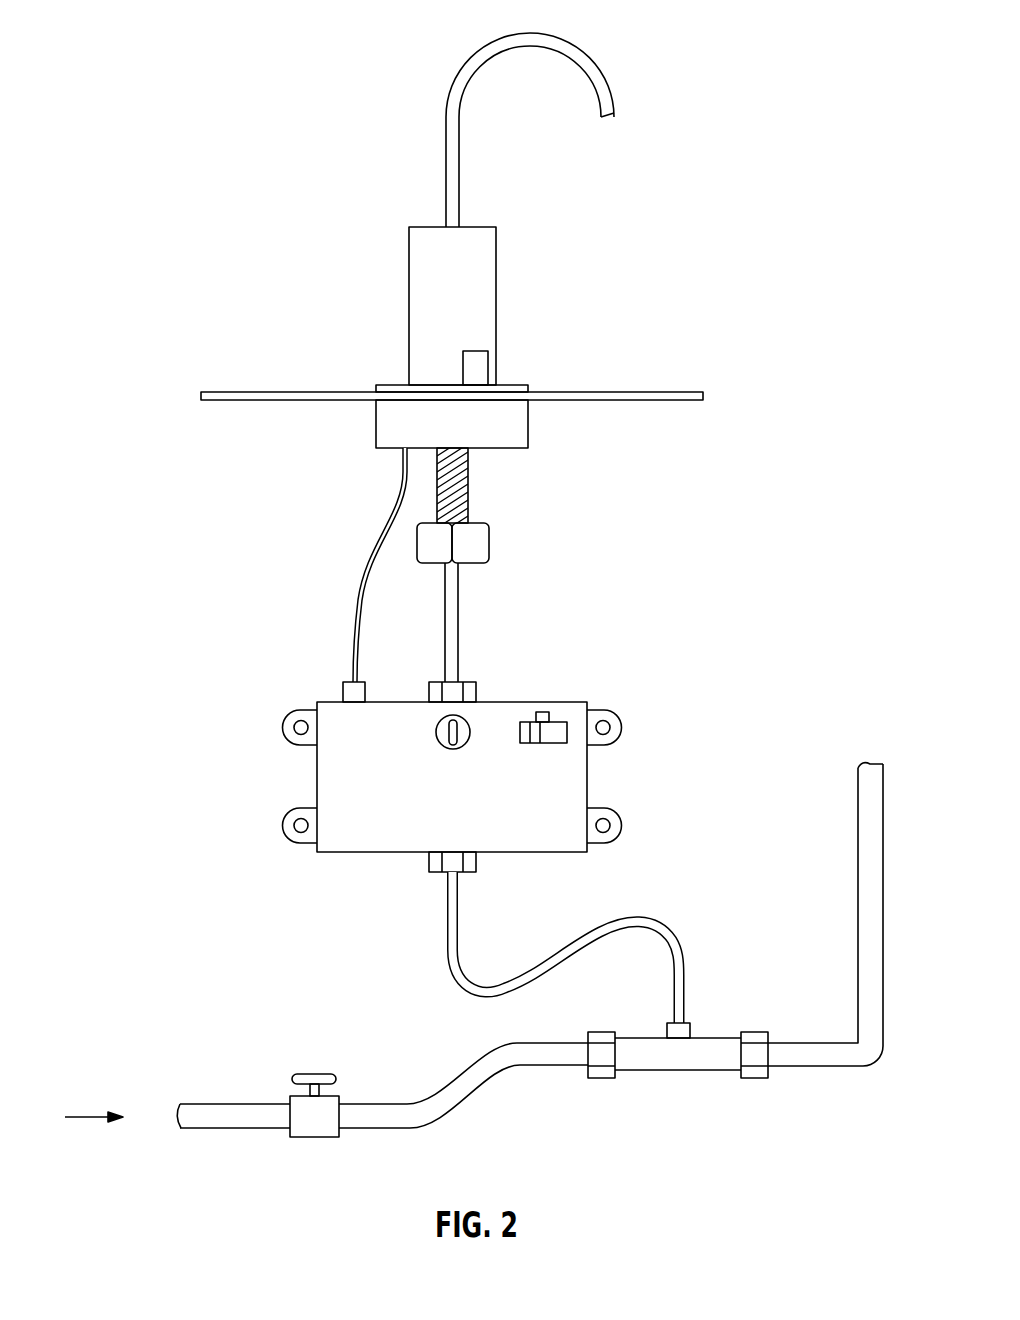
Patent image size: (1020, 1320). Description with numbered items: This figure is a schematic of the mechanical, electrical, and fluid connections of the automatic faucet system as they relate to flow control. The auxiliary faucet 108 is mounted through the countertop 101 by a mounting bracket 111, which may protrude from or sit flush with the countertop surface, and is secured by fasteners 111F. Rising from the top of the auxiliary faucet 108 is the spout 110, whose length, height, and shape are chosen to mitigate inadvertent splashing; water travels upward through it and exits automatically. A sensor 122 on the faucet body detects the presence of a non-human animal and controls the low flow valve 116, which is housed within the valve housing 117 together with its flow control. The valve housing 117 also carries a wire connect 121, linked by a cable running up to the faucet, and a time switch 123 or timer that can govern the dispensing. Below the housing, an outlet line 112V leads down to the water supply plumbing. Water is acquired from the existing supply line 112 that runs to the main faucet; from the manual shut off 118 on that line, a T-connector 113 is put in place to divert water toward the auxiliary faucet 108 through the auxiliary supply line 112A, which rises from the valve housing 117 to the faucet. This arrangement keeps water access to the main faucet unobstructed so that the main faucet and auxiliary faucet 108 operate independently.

The spout 110 is at (528, 33).
The auxiliary faucet 108 is at (487, 247).
The sensor 122 is at (477, 368).
The countertop 101 is at (242, 400).
The mounting bracket 111 is at (390, 424).
The fasteners 111F is at (467, 485).
The auxiliary supply line 112A is at (459, 625).
The wire connect 121 is at (343, 693).
The valve housing 117 is at (590, 775).
The low flow valve 116 is at (436, 740).
The time switch 123 is at (553, 722).
The valve outlet line 112V is at (447, 928).
The T-connector 113 is at (677, 1065).
The supply lines 112 is at (858, 838).
The manual shut off 118 is at (315, 1137).